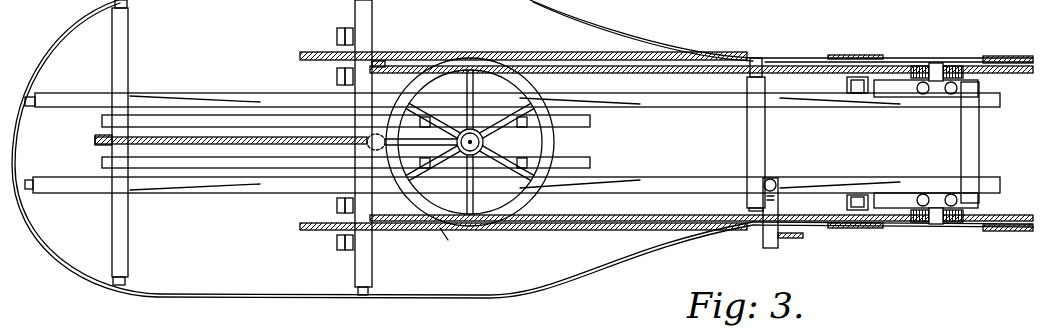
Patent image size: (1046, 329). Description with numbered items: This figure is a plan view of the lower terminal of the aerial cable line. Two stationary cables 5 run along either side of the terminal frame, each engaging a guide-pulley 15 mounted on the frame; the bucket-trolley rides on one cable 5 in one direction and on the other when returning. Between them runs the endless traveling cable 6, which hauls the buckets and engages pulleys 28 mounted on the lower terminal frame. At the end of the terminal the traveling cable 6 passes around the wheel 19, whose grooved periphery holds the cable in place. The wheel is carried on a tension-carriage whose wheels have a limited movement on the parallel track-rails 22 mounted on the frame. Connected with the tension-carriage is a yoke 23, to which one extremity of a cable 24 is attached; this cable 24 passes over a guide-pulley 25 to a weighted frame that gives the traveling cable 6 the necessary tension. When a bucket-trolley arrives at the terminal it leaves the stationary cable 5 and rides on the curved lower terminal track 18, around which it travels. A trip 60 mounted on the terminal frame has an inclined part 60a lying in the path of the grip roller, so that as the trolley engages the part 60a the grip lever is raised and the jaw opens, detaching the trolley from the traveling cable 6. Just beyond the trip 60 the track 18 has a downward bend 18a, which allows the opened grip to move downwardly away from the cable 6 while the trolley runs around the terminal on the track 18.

The stationary cable 5 is at (1011, 57).
The endless traveling cable 6 is at (808, 67).
The guide-pulley 15 is at (870, 55).
The lower terminal track 18 is at (652, 42).
The downward bend 18a is at (895, 230).
The wheel 19 is at (438, 73).
The track-rail 22 is at (200, 122).
The yoke 23 is at (418, 142).
The cable 24 is at (277, 143).
The guide-pulley 25 is at (100, 146).
The pulley 28 is at (926, 65).
The trip 60 is at (765, 232).
The inclined part 60a is at (797, 238).